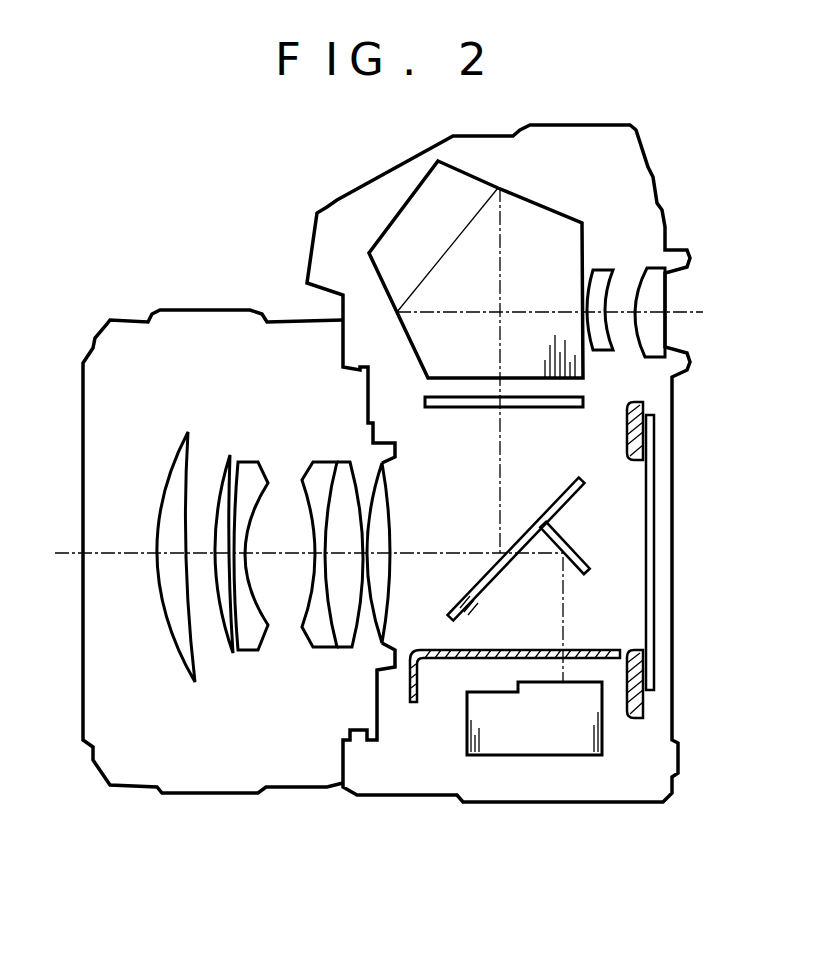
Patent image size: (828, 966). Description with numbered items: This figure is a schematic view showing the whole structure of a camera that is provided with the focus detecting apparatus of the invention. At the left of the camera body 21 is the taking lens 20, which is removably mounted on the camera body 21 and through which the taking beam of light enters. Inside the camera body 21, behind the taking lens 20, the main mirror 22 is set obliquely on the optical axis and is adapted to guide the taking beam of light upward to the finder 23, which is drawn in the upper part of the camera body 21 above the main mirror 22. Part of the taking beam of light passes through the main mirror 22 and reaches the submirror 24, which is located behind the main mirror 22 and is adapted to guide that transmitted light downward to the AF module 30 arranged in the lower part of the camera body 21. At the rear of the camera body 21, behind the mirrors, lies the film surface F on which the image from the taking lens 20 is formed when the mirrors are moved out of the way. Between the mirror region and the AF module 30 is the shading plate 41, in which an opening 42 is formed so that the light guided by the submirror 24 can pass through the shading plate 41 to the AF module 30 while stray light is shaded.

The taking lens 20 is at (353, 398).
The camera body 21 is at (672, 403).
The main mirror 22 is at (552, 498).
The finder 23 is at (665, 295).
The submirror 24 is at (560, 537).
The AF module 30 is at (557, 738).
The shading plate 41 is at (495, 653).
The opening 42 is at (560, 647).
The film surface F is at (640, 597).